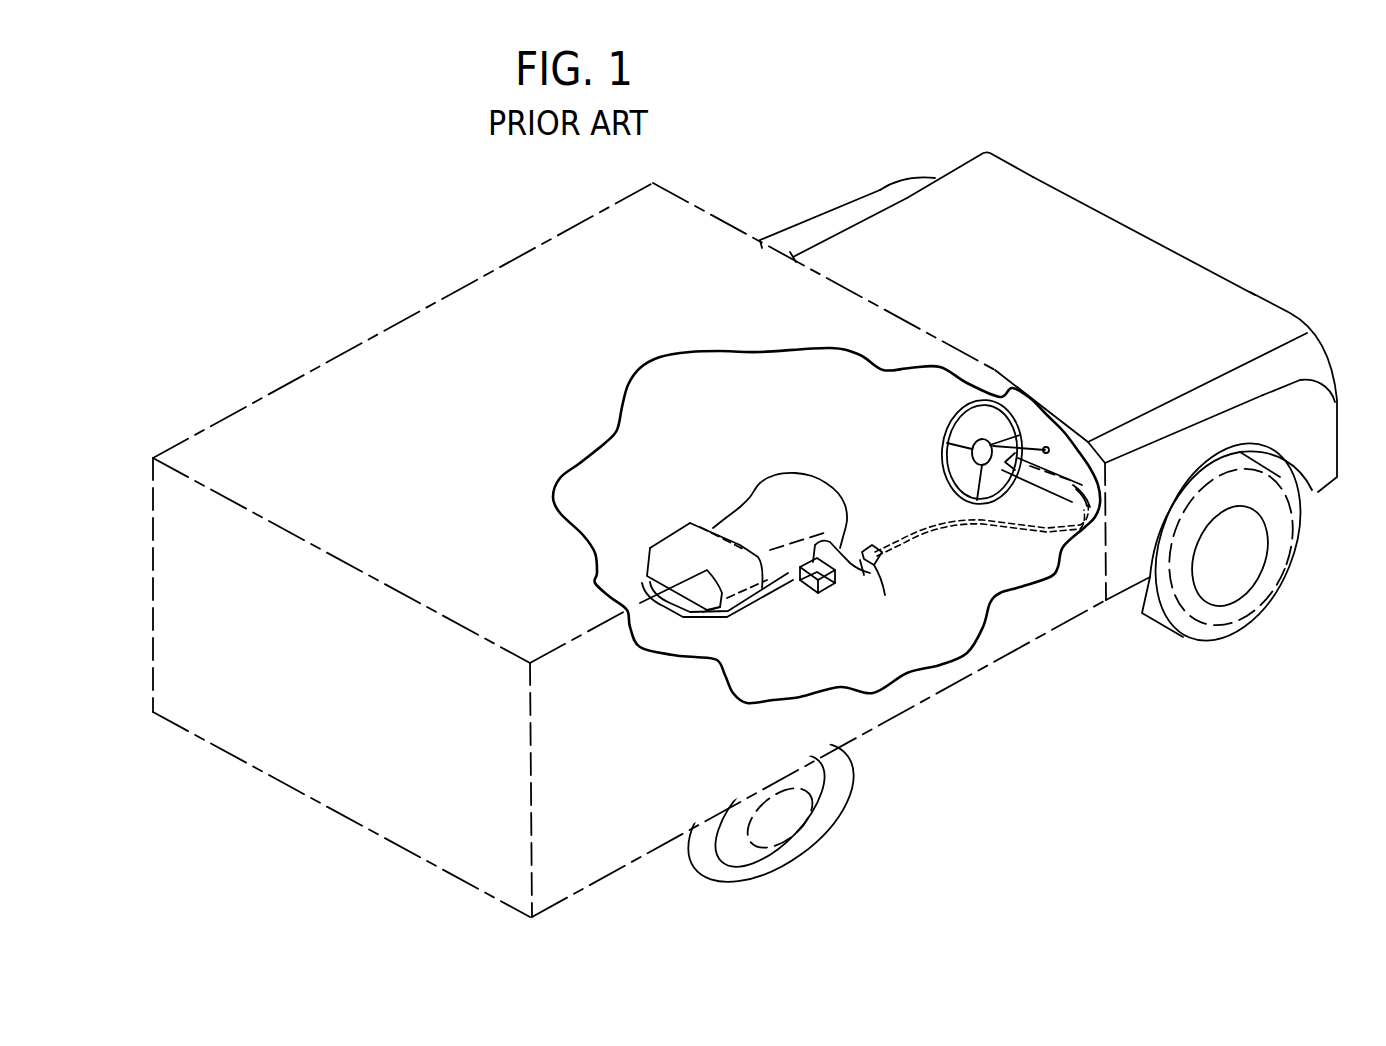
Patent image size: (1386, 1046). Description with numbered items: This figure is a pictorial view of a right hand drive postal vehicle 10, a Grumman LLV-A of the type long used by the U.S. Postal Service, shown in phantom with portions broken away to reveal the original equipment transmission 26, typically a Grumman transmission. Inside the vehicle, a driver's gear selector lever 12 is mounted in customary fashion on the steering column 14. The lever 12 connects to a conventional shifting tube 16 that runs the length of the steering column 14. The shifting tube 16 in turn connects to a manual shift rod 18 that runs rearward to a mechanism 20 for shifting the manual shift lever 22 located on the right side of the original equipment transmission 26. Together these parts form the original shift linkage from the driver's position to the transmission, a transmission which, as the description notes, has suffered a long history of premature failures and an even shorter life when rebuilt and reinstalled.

The right hand drive postal vehicle 10 is at (378, 261).
The driver's gear selector lever 12 is at (1024, 452).
The steering column 14 is at (1077, 442).
The shifting tube 16 is at (1058, 458).
The manual shift rod 18 is at (1037, 533).
The mechanism 20 is at (865, 604).
The manual shift lever 22 is at (817, 592).
The original equipment transmission 26 is at (718, 492).